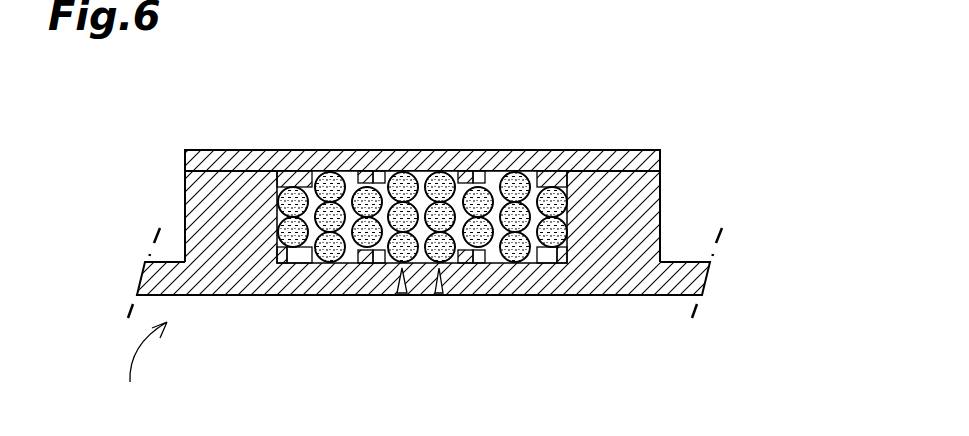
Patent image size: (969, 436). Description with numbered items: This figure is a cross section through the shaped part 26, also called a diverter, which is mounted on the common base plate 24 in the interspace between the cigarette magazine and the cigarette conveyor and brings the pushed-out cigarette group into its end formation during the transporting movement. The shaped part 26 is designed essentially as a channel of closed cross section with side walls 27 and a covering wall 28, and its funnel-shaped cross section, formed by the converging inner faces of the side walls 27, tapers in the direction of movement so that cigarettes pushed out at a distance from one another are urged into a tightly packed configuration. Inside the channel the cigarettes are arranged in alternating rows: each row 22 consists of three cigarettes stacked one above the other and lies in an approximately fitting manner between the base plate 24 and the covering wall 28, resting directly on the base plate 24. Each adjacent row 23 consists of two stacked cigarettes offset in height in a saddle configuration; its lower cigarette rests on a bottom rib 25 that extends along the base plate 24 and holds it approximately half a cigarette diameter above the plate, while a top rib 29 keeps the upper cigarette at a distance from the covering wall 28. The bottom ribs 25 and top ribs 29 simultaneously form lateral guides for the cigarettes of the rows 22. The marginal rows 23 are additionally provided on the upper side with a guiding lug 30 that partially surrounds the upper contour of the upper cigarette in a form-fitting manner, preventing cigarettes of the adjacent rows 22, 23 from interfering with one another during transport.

The row 22 is at (440, 295).
The row 23 is at (584, 211).
The base plate 24 is at (663, 296).
The bottom ribs 25 is at (300, 253).
The shaped part 26 is at (138, 371).
The side walls 27 is at (207, 198).
The covering wall 28 is at (590, 149).
The top ribs 29 is at (366, 171).
The guiding lug 30 is at (312, 171).